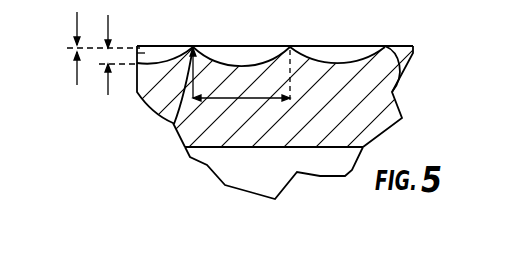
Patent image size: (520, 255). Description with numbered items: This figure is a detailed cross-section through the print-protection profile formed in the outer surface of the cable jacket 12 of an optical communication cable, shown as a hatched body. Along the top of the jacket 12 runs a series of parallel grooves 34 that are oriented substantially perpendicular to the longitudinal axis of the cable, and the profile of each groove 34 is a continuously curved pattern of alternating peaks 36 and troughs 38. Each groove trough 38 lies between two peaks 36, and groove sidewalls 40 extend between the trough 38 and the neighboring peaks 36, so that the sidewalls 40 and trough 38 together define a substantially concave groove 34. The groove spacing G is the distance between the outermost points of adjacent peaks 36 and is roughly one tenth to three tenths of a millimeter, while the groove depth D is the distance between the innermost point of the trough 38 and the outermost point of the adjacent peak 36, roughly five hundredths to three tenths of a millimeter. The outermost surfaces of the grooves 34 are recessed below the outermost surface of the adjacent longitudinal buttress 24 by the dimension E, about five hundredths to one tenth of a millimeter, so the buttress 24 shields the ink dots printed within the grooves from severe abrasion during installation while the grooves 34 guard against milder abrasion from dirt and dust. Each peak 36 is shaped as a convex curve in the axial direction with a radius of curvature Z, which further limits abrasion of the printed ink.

The cable jacket 12 is at (402, 120).
The first longitudinal buttress 24 is at (413, 47).
The groove 34 is at (313, 30).
The peak 36 is at (290, 47).
The groove trough 38 is at (343, 64).
The groove sidewall 40 is at (176, 130).
The recess dimension E is at (101, 48).
The groove depth D is at (112, 55).
The radius of curvature Z is at (201, 73).
The groove spacing G is at (241, 93).